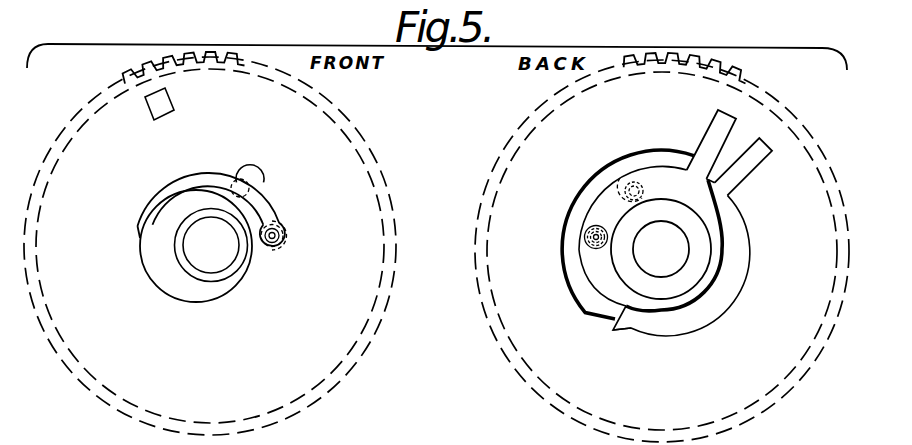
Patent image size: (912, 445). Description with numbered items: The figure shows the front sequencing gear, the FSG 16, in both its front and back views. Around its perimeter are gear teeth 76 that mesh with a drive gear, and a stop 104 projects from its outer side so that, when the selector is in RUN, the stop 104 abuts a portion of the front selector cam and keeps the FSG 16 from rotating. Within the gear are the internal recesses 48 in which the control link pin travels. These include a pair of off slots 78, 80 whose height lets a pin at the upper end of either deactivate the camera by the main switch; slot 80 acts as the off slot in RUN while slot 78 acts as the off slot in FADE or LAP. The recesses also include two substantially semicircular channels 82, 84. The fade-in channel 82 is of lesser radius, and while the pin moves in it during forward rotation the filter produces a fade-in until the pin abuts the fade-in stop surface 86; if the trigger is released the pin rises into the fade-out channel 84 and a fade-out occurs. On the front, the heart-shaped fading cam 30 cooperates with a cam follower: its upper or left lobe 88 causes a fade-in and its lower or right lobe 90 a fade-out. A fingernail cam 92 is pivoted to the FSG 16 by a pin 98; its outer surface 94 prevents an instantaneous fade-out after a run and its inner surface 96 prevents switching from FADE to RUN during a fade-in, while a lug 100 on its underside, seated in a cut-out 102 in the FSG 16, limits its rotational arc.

The FSG (front sequencing gear) 16 is at (372, 150).
The fading cam 30 is at (172, 249).
The internal recesses 48 is at (676, 340).
The gear teeth 76 is at (160, 64).
The off slot 78 is at (718, 118).
The off slot 80 is at (772, 148).
The fade-in channel 82 is at (742, 261).
The fade-out channel 84 is at (580, 191).
The fade-in stop surface 86 is at (613, 330).
The upper or left lobe 88 is at (168, 188).
The lower or right lobe 90 is at (173, 291).
The fingernail cam 92 is at (272, 212).
The outer surface 94 is at (205, 171).
The inner surface 96 is at (257, 230).
The pin 98 is at (285, 241).
The lug 100 is at (250, 191).
The cut-out 102 is at (251, 170).
The stop 104 is at (172, 100).